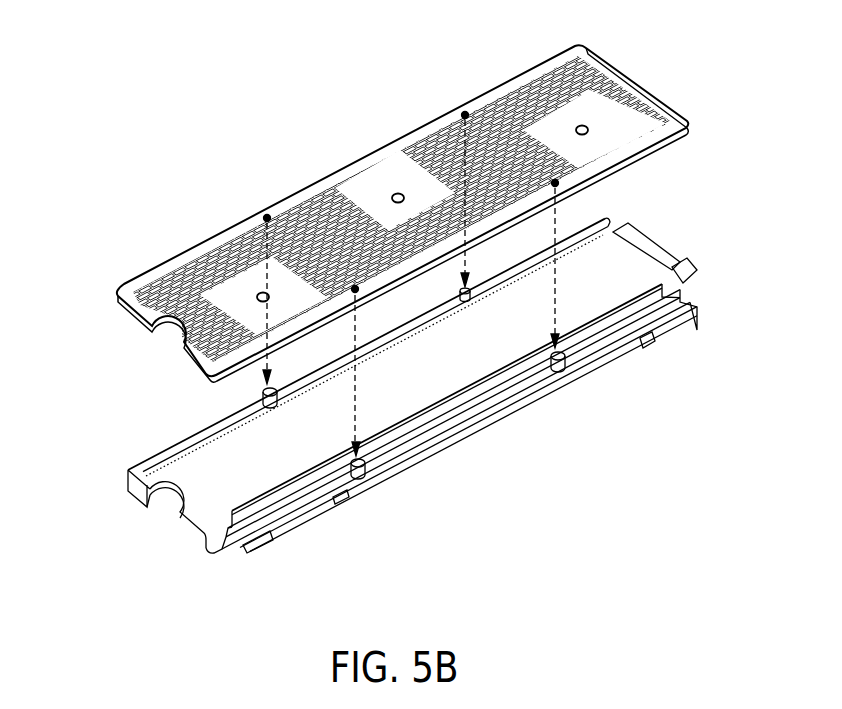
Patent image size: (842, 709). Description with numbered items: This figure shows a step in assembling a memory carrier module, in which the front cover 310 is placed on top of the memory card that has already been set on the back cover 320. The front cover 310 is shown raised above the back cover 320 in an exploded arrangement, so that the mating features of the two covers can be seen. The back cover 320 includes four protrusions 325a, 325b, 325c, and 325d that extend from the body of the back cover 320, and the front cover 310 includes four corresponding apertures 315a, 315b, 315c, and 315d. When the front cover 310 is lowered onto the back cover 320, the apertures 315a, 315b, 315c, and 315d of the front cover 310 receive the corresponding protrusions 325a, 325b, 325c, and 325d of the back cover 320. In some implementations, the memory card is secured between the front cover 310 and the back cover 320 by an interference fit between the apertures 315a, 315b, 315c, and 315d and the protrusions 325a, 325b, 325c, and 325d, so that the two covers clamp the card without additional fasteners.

The front cover 310 is at (533, 28).
The aperture 315a is at (368, 293).
The aperture 315b is at (571, 191).
The aperture 315c is at (457, 103).
The aperture 315d is at (263, 213).
The back cover 320 is at (677, 307).
The protrusion 325a is at (362, 478).
The protrusion 325b is at (560, 373).
The protrusion 325c is at (640, 348).
The protrusion 325d is at (262, 395).